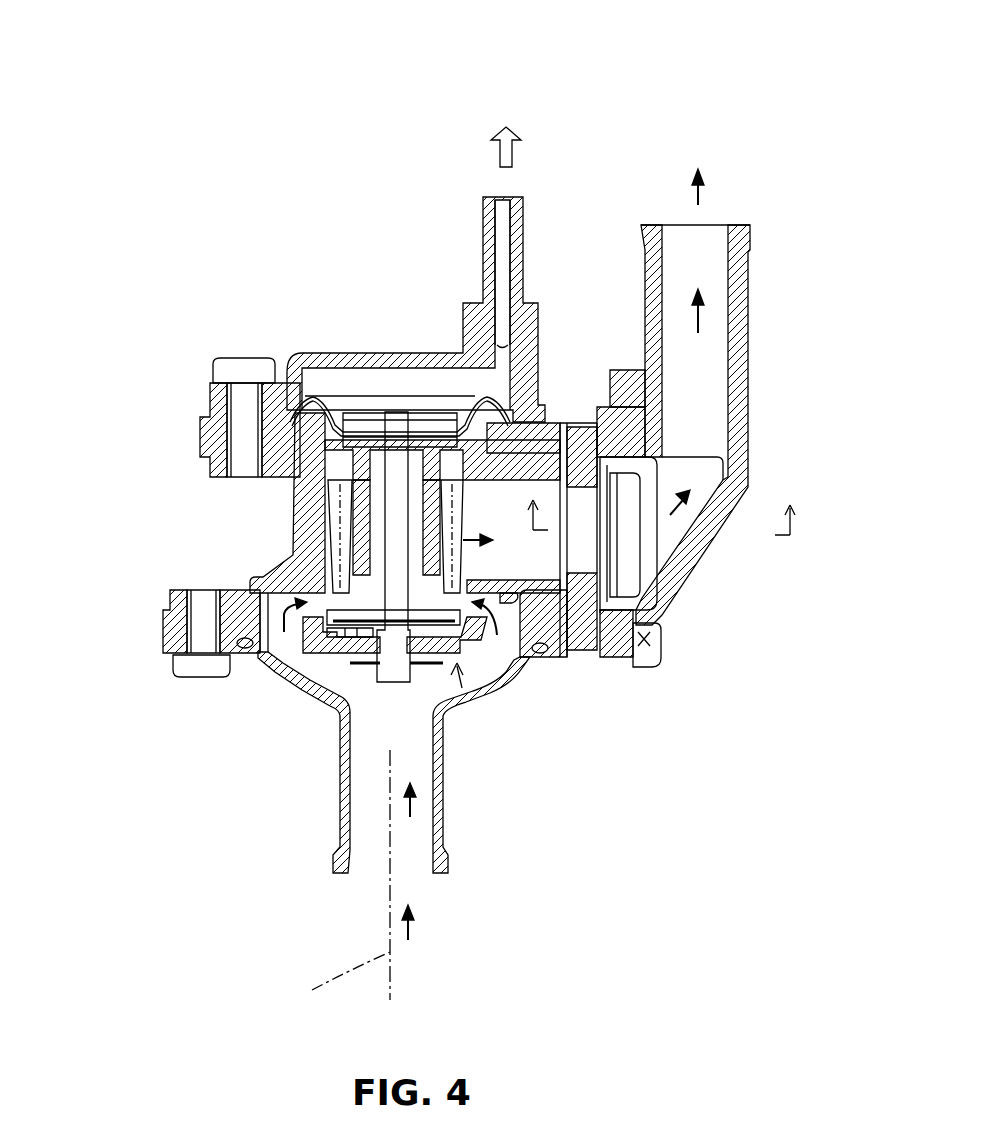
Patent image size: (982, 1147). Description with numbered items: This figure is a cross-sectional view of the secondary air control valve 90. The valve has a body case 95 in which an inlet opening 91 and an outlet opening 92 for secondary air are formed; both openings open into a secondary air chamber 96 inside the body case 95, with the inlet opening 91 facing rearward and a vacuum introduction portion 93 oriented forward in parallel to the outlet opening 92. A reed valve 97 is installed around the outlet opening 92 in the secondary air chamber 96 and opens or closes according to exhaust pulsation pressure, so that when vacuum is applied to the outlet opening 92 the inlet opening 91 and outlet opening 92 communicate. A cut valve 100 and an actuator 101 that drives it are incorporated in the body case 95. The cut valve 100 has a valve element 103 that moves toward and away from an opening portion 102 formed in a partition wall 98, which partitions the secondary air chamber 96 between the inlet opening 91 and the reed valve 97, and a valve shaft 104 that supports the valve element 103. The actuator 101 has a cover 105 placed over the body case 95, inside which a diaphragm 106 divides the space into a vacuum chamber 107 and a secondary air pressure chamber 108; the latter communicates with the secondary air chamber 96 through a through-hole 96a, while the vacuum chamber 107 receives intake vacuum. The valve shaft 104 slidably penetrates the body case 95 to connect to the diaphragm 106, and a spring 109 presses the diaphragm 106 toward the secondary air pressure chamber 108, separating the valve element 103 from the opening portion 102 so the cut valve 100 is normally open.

The secondary air control valve 90 is at (330, 102).
The inlet opening 91 is at (412, 873).
The outlet opening 92 is at (720, 225).
The vacuum introduction portion 93 is at (508, 197).
The body case 95 is at (293, 523).
The secondary air chamber 96 is at (407, 732).
The through-hole 96a is at (330, 457).
The reed valve 97 is at (617, 542).
The partition wall 98 is at (480, 650).
The cut valve 100 is at (463, 650).
The actuator 101 is at (375, 346).
The opening portion 102 is at (442, 663).
The valve element 103 is at (470, 650).
The valve shaft 104 is at (395, 672).
The cover 105 is at (408, 353).
The diaphragm 106 is at (305, 378).
The vacuum chamber 107 is at (347, 382).
The secondary air pressure chamber 108 is at (325, 439).
The spring 109 is at (330, 557).